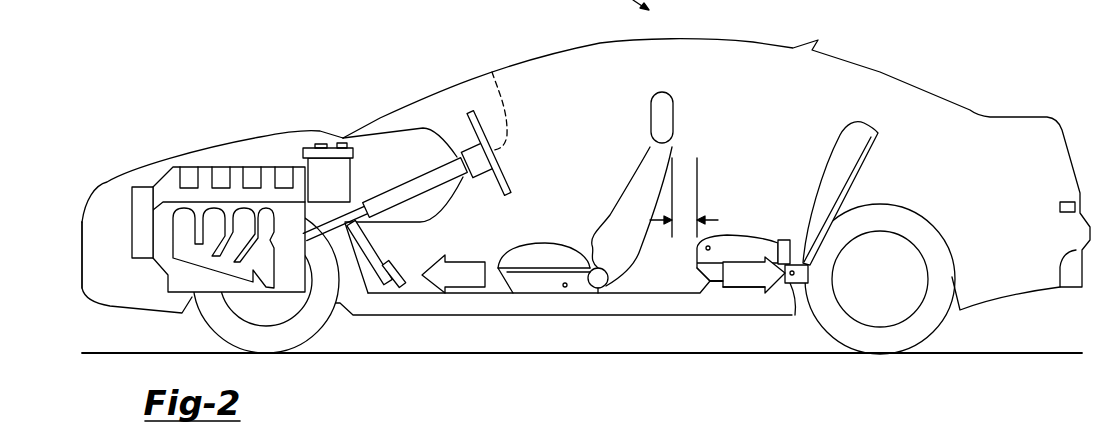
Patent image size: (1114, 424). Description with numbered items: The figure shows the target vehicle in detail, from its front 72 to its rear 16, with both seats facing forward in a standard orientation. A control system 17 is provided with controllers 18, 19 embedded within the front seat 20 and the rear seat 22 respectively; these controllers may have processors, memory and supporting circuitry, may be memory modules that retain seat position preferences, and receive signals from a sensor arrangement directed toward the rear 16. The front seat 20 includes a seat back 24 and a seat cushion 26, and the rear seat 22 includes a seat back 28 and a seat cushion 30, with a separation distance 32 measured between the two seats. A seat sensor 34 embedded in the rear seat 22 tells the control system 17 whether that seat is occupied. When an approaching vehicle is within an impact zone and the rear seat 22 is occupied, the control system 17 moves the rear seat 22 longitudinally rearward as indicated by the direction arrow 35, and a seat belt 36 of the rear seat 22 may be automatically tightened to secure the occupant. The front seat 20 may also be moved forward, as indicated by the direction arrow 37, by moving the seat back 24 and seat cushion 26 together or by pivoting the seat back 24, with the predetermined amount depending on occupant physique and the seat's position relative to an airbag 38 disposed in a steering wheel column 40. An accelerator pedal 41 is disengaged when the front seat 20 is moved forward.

The rear 16 is at (1070, 140).
The control system 17 is at (754, 298).
The controller 18 is at (565, 287).
The controller 19 is at (792, 279).
The front seat 20 is at (541, 298).
The rear seat 22 is at (713, 287).
The seat back 24 is at (620, 192).
The seat cushion 26 is at (542, 245).
The seat back 28 is at (830, 152).
The seat cushion 30 is at (750, 237).
The separation distance 32 is at (684, 197).
The seat sensor 34 is at (704, 252).
The direction arrow 35 is at (742, 288).
The seat belt 36 is at (786, 238).
The direction arrow 37 is at (463, 288).
The airbag 38 is at (492, 72).
The steering wheel column 40 is at (467, 136).
The accelerator pedal 41 is at (398, 272).
The front 72 is at (82, 222).